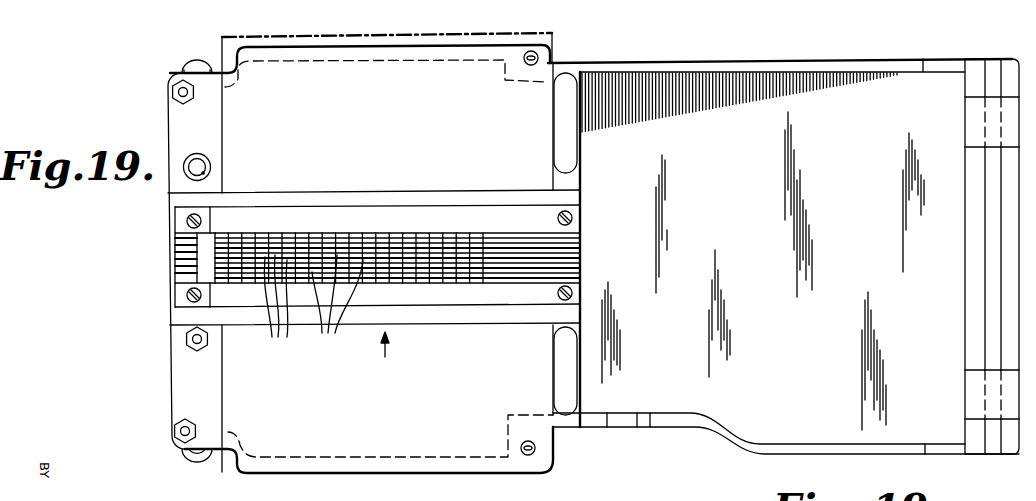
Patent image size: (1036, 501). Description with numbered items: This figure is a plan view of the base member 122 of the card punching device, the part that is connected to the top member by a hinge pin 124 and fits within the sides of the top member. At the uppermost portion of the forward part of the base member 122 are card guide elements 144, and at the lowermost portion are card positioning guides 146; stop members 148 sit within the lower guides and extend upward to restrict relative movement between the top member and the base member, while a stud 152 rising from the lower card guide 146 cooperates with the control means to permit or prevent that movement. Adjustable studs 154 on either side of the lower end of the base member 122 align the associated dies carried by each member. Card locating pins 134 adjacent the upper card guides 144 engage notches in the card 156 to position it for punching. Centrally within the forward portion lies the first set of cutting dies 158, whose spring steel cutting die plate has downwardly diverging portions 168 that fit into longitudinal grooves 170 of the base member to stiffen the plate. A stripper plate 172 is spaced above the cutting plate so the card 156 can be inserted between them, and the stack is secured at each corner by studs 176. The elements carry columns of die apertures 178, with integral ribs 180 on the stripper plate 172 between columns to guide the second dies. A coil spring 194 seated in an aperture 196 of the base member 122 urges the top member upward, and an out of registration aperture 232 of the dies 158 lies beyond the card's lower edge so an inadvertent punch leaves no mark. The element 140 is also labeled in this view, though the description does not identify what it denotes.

The base member 122 is at (904, 461).
The hinge pin 124 is at (997, 455).
The card locating pins 134 is at (528, 66).
The cover 140 is at (475, 477).
The card guide elements 144 is at (558, 147).
The card positioning guides 146 is at (217, 147).
The stop members 148 is at (173, 101).
The stud 152 is at (187, 345).
The adjustable studs 154 is at (192, 63).
The card 156 is at (552, 42).
The first set of cutting dies 158 is at (382, 355).
The downwardly diverging portions 168 is at (465, 177).
The longitudinal grooves 170 is at (370, 173).
The stripper plate 172 is at (447, 297).
The studs 176 is at (185, 222).
The die apertures 178 is at (337, 308).
The integral ribs 180 is at (281, 308).
The coil spring 194 is at (185, 170).
The aperture 196 is at (187, 160).
The out of registration aperture 232 is at (200, 270).